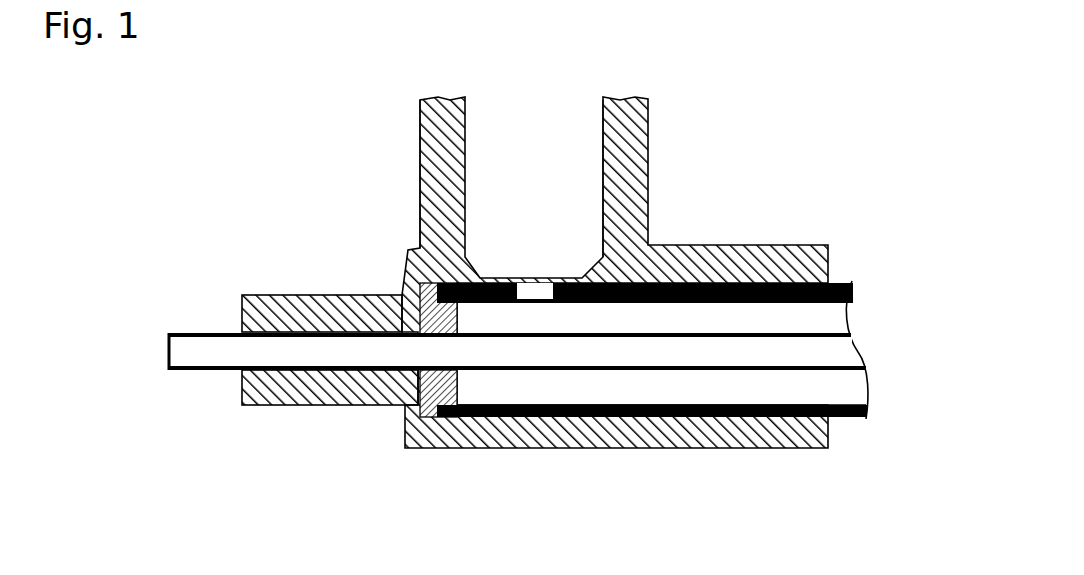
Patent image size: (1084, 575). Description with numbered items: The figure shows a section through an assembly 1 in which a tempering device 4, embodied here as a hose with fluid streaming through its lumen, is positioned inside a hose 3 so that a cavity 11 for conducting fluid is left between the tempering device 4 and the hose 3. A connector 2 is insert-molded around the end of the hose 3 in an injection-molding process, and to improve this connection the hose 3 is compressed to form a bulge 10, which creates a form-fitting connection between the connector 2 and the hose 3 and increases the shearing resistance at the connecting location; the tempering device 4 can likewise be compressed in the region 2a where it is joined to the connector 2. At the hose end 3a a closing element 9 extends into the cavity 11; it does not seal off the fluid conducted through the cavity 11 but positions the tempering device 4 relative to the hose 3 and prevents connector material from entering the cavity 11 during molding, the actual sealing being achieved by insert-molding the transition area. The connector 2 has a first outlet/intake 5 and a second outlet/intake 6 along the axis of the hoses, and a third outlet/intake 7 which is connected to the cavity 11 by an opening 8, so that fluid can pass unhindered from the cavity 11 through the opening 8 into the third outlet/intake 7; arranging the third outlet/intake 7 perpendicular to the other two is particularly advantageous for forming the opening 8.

The assembly 1 is at (635, 284).
The connector 2 is at (329, 322).
The region 2a is at (320, 393).
The hose 3 is at (621, 224).
The hose end 3a is at (419, 190).
The tempering device 4 is at (209, 368).
The first outlet/intake 5 is at (856, 432).
The second outlet/intake 6 is at (219, 309).
The third outlet/intake 7 is at (576, 78).
The opening 8 is at (533, 290).
The closing element 9 is at (405, 450).
The bulge 10 is at (710, 282).
The cavity 11 is at (854, 388).